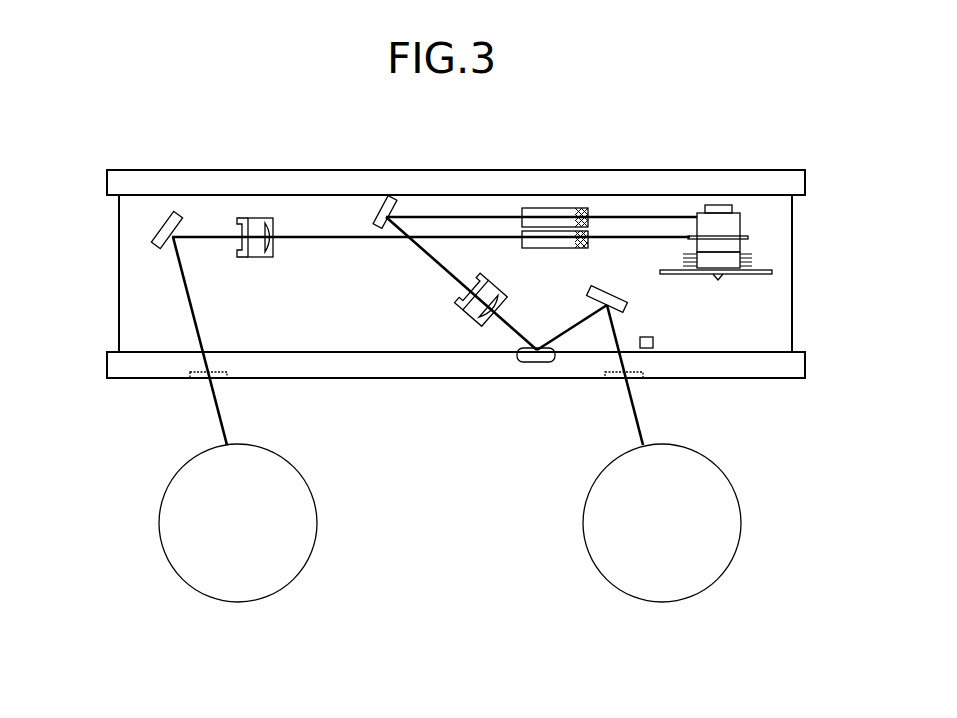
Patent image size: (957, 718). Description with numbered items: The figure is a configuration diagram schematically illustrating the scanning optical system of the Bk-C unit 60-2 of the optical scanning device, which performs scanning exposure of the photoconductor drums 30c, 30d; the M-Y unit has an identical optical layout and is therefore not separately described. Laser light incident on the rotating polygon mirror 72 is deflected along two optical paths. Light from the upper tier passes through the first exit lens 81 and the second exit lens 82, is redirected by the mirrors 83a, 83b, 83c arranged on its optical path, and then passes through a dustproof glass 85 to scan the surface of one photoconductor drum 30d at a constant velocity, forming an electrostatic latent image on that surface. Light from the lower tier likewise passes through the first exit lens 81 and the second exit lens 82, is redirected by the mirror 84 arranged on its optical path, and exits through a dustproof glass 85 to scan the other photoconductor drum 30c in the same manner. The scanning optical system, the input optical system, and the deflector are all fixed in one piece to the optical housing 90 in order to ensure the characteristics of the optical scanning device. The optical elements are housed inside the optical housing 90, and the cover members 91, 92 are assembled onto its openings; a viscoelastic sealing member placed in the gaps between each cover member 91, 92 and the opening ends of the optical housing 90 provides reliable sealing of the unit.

The photoconductor drum 30c is at (298, 532).
The photoconductor drum 30d is at (727, 535).
The Bk-C unit 60-2 is at (456, 277).
The rotating polygon mirror 72 is at (721, 205).
The first exit lens 81 is at (562, 207).
The second exit lens 82 is at (258, 220).
The mirror 83a is at (385, 197).
The mirror 83b is at (531, 367).
The mirror 83c is at (609, 291).
The mirror 84 is at (168, 223).
The dustproof glass 85 is at (195, 380).
The optical housing 90 is at (343, 335).
The cover member 91 is at (427, 185).
The cover member 92 is at (418, 370).